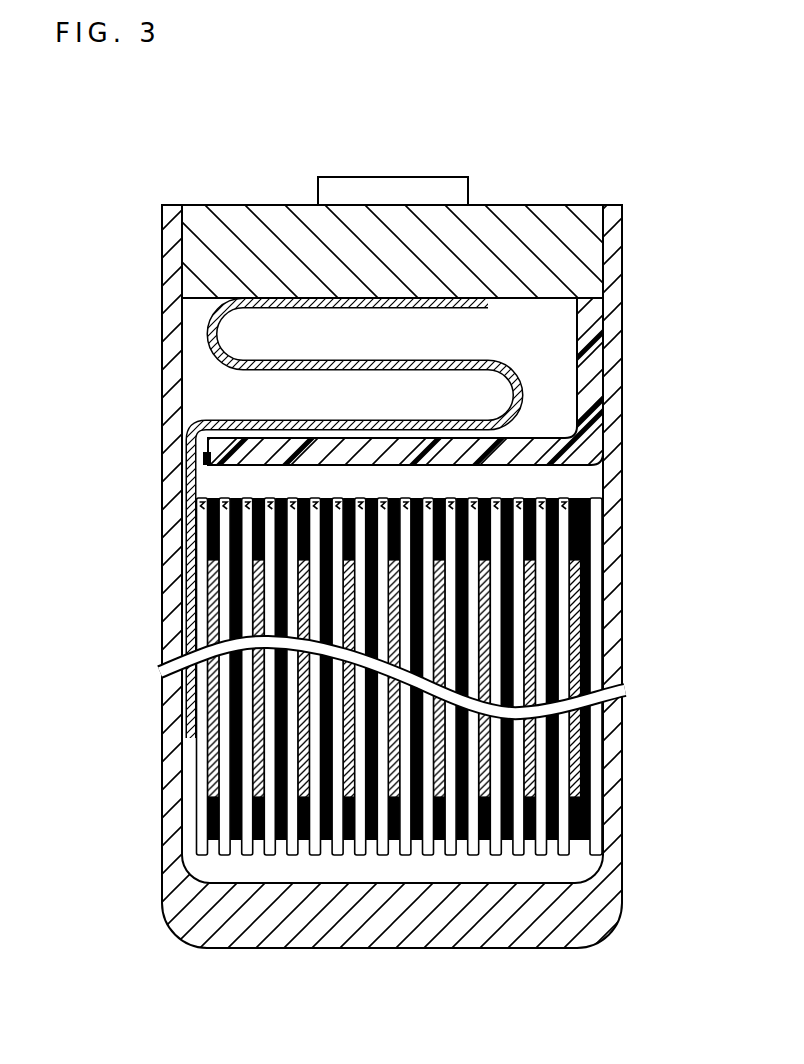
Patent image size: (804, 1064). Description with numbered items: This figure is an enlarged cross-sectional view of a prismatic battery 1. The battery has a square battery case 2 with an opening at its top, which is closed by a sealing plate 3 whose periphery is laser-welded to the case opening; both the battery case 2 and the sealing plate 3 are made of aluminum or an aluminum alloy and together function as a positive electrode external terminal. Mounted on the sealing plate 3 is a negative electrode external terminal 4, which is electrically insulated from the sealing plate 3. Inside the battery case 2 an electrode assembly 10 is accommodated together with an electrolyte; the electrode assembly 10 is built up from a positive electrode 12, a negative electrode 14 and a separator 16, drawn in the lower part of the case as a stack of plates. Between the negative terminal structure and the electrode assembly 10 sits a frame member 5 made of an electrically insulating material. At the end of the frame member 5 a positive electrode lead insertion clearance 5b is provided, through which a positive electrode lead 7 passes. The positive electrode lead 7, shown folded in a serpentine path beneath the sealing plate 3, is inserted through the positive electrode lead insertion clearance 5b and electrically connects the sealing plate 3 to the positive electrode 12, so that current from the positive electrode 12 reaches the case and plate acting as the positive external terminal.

The prismatic battery 1 is at (594, 146).
The battery case 2 is at (168, 778).
The sealing plate 3 is at (234, 232).
The negative electrode external terminal 4 is at (402, 185).
The frame member 5 is at (590, 385).
The positive electrode lead insertion clearance 5b is at (203, 457).
The positive electrode lead 7 is at (205, 339).
The electrode assembly 10 is at (680, 563).
The positive electrode 12 is at (604, 714).
The negative electrode 14 is at (573, 577).
The separator 16 is at (585, 838).